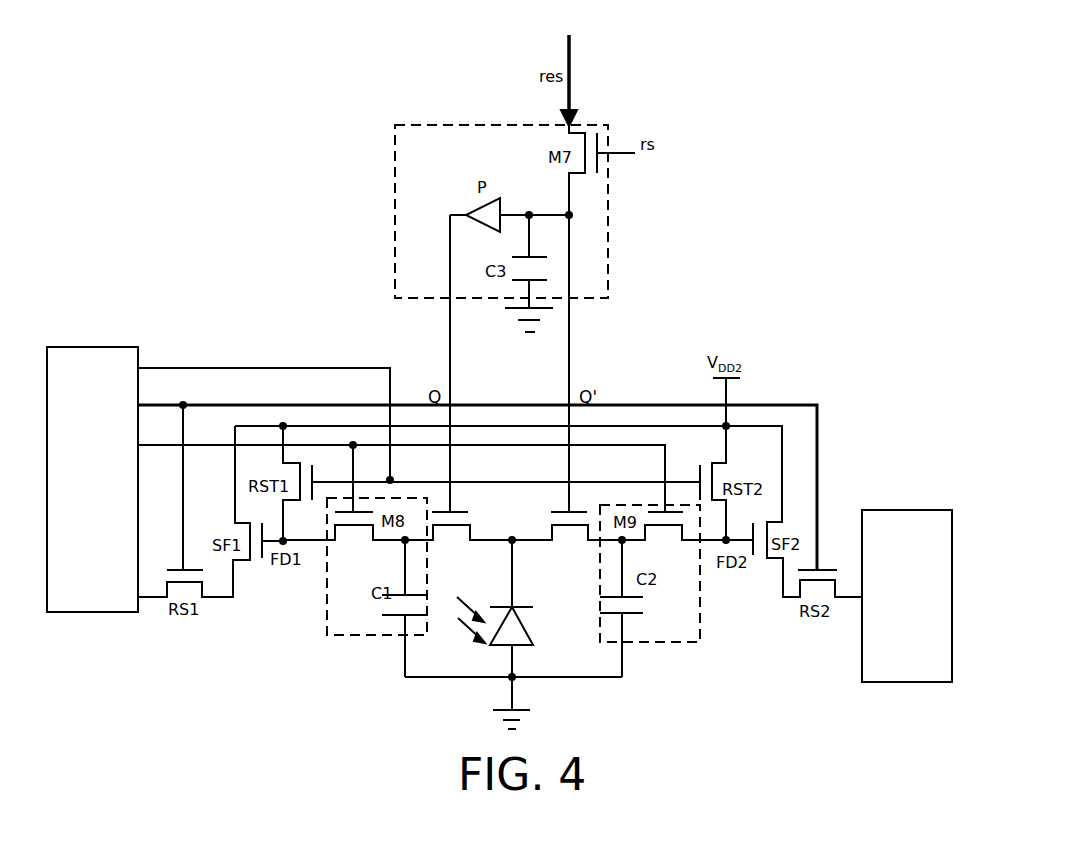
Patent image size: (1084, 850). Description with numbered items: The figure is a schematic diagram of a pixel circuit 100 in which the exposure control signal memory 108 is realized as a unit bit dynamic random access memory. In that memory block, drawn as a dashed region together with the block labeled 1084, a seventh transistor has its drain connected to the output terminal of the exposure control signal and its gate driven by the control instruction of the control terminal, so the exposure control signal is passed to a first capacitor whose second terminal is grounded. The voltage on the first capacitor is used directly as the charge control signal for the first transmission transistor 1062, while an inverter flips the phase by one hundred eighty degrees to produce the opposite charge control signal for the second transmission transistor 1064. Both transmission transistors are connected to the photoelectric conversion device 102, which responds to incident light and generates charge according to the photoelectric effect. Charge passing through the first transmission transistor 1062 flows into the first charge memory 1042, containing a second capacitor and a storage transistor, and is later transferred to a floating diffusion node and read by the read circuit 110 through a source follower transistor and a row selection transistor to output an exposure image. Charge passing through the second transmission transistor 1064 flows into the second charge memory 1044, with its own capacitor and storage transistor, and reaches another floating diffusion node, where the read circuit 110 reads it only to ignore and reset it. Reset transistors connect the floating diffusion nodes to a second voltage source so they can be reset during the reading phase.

The pixel circuit 100 is at (662, 211).
The photoelectric conversion device 102 is at (520, 647).
The exposure control signal memory 108 is at (590, 125).
The read circuit 110 is at (115, 613).
The first charge memory 1042 is at (343, 635).
The second charge memory 1044 is at (672, 643).
The first transmission transistor 1062 is at (447, 528).
The second transmission transistor 1064 is at (563, 530).
The buffer and capacitor unit 1084 is at (397, 296).